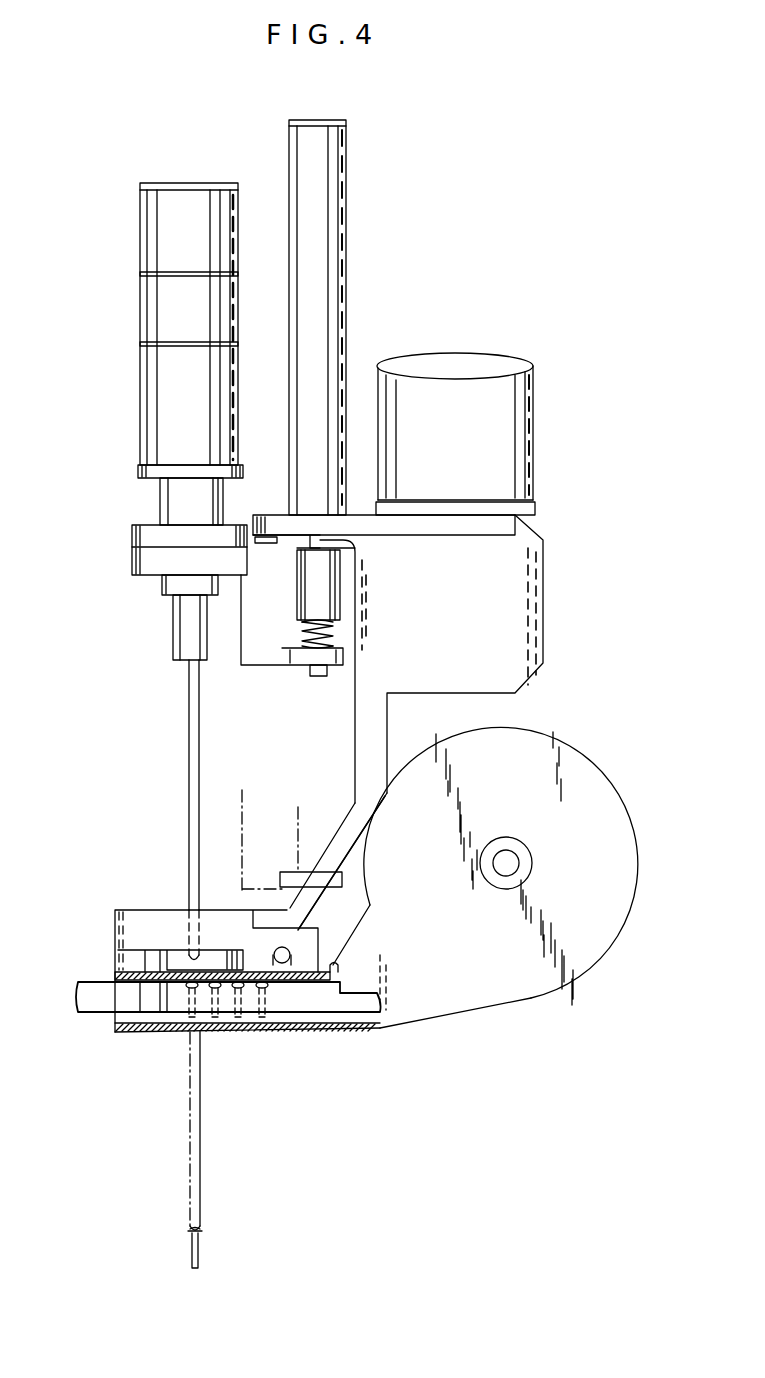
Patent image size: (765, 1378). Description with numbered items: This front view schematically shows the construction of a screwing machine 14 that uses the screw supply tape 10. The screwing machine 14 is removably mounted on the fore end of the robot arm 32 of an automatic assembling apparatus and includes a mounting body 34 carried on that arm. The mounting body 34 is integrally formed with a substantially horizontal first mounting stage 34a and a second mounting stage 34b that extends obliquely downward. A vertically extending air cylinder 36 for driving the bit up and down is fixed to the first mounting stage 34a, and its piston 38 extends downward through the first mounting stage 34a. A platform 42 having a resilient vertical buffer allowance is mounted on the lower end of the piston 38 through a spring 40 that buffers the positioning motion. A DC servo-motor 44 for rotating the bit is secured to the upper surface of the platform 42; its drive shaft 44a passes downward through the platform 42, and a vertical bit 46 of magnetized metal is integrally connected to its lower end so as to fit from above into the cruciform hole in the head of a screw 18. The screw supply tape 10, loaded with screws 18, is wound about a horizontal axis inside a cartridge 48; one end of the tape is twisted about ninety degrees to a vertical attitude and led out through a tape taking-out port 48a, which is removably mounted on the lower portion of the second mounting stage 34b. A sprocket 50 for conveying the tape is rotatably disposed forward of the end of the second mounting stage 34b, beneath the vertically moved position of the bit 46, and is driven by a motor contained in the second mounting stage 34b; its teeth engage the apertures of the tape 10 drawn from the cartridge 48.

The screw supply tape 10 is at (98, 978).
The screwing machine 14 is at (430, 719).
The screw 18 is at (252, 1022).
The robot arm 32 is at (455, 388).
The mounting body 34 is at (543, 660).
The first mounting stage 34a is at (330, 522).
The second mounting stage 34b is at (337, 832).
The air cylinder 36 is at (318, 340).
The piston 38 is at (325, 540).
The spring 40 is at (340, 640).
The platform 42 is at (270, 648).
The DC servo-motor 44 is at (165, 420).
The drive shaft 44a is at (188, 612).
The bit 46 is at (193, 745).
The cartridge 48 is at (597, 790).
The tape taking-out port 48a is at (283, 1030).
The sprocket 50 is at (152, 1002).